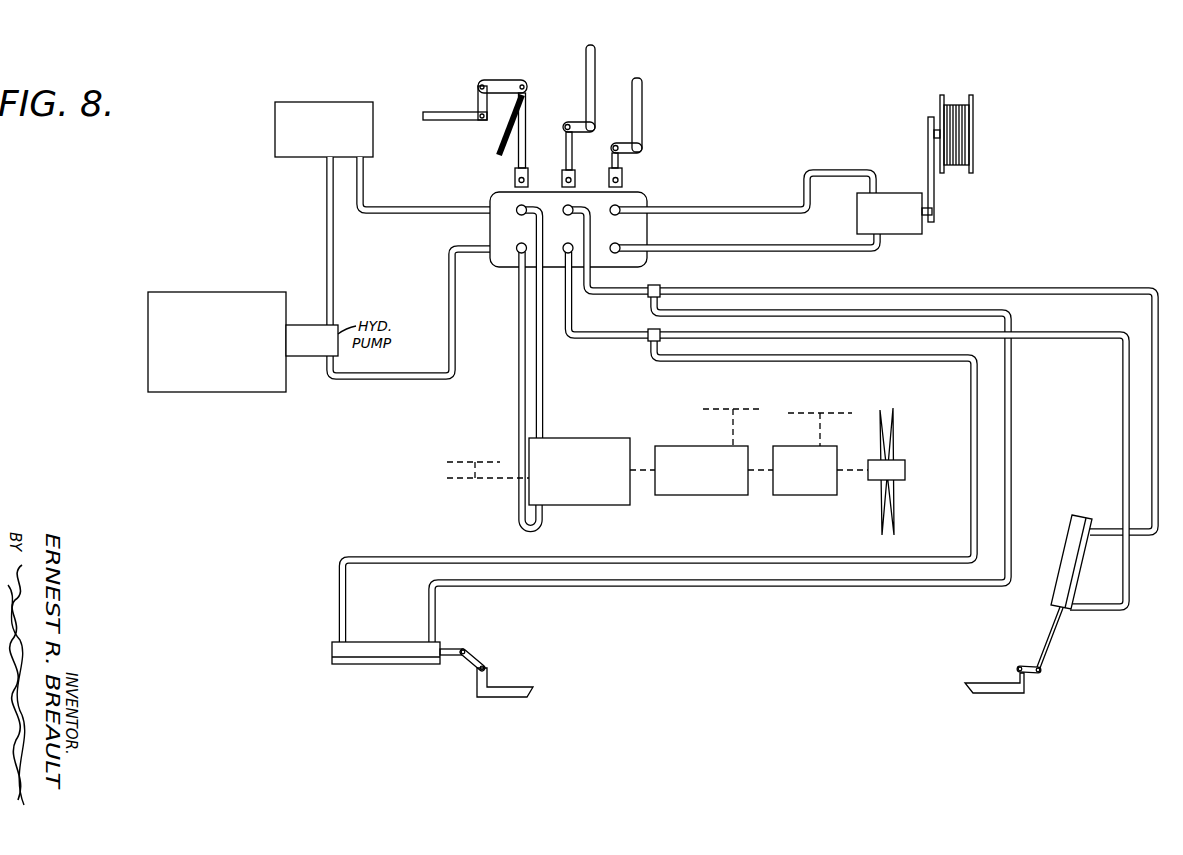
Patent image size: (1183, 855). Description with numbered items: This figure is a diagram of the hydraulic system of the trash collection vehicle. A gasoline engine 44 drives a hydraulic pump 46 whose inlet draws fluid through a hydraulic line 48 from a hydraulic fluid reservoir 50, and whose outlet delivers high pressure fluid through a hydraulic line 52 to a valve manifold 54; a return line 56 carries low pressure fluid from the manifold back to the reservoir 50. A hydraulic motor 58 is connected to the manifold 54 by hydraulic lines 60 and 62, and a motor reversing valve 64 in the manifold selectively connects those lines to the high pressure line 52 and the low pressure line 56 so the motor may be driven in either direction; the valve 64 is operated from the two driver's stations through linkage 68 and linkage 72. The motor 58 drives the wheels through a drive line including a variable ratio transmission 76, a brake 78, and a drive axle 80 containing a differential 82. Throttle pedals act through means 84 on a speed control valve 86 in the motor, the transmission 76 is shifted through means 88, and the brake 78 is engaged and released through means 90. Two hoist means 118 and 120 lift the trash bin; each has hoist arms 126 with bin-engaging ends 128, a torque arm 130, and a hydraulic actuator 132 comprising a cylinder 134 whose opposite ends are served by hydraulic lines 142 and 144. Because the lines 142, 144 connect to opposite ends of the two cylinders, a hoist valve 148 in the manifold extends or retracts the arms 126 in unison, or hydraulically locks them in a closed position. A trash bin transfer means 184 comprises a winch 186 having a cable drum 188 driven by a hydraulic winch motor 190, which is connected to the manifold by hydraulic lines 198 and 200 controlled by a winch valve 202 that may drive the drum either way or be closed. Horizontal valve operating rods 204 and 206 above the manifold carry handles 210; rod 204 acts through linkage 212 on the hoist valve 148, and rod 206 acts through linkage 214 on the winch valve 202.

The gasoline engine 44 is at (160, 292).
The hydraulic pump 46 is at (310, 357).
The hydraulic line 48 is at (324, 247).
The hydraulic fluid reservoir 50 is at (292, 102).
The hydraulic line 52 is at (448, 305).
The valve manifold 54 is at (489, 233).
The return line 56 is at (403, 218).
The hydraulic motor 58 is at (592, 438).
The hydraulic line 60 is at (543, 378).
The hydraulic line 62 is at (518, 398).
The motor reversing valve 64 is at (515, 187).
The linkage 68 is at (497, 138).
The linkage 72 is at (447, 111).
The variable ratio transmission 76 is at (681, 446).
The brake 78 is at (795, 446).
The drive axle 80 is at (888, 500).
The differential 82 is at (905, 470).
The valve operating means 84 is at (447, 481).
The speed control valve 86 is at (542, 506).
The transmission operating means 88 is at (733, 409).
The brake operating means 90 is at (820, 413).
The hoist means 118 is at (447, 690).
The hoist means 120 is at (1022, 622).
The trash bin hoist arm 126 is at (508, 698).
The trash-bin engaging end 128 is at (520, 685).
The torque arm 130 is at (481, 656).
The hydraulic actuator 132 is at (331, 652).
The cylinder 134 is at (368, 659).
The hydraulic line 142 is at (594, 291).
The hydraulic line 144 is at (576, 331).
The hoist valve 148 is at (560, 183).
The trash bin transfer means 184 is at (966, 187).
The winch 186 is at (934, 212).
The cable drum 188 is at (973, 152).
The hydraulic winch motor 190 is at (897, 235).
The hydraulic line 198 is at (822, 172).
The hydraulic line 200 is at (772, 246).
The winch valve 202 is at (623, 183).
The valve operating rod 204 is at (562, 127).
The valve operating rod 206 is at (612, 148).
The handle 210 is at (635, 78).
The linkage 212 is at (569, 121).
The linkage 214 is at (650, 122).